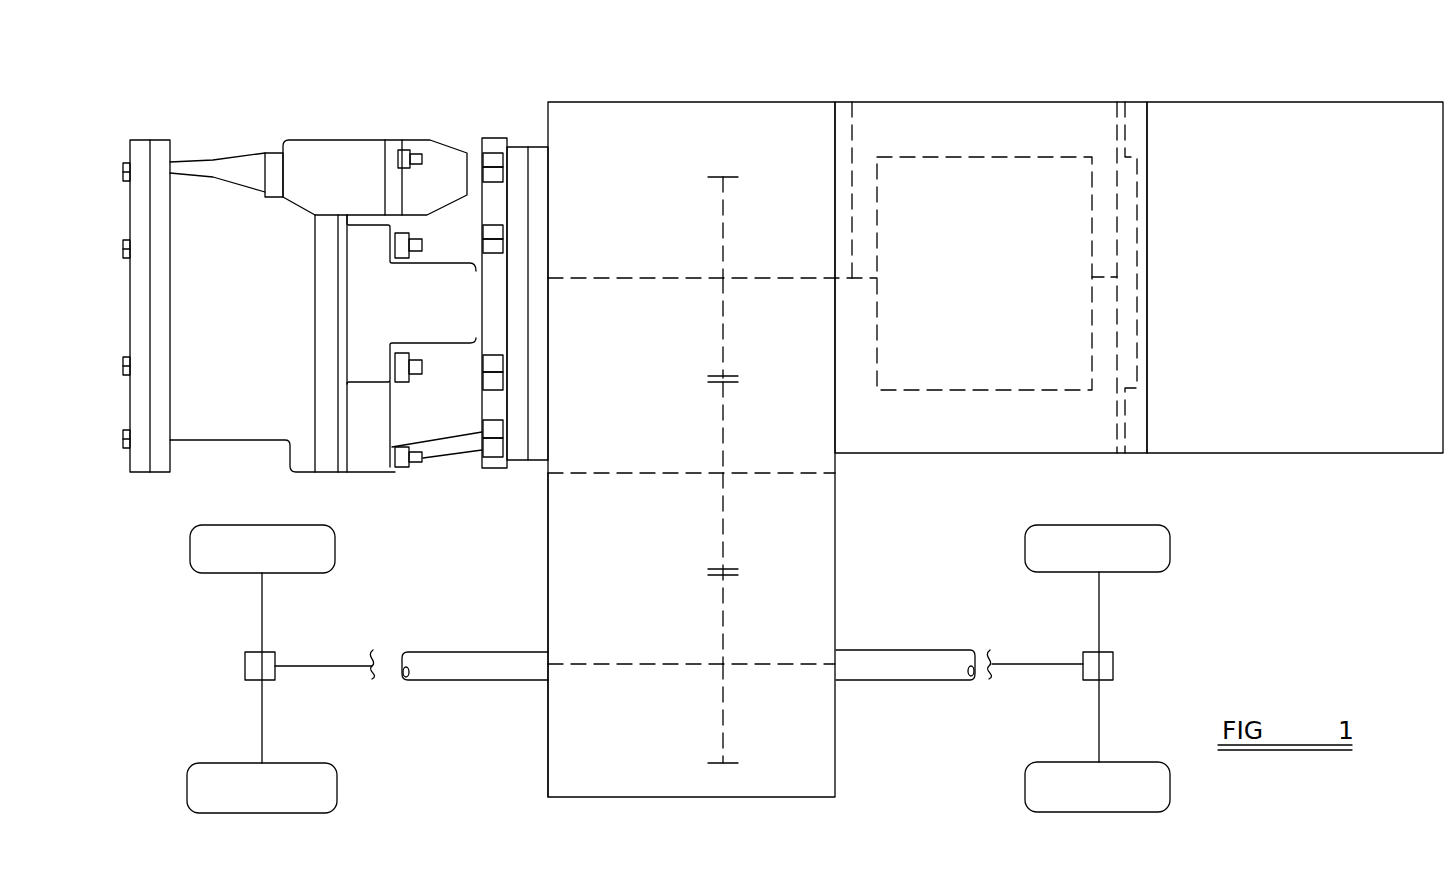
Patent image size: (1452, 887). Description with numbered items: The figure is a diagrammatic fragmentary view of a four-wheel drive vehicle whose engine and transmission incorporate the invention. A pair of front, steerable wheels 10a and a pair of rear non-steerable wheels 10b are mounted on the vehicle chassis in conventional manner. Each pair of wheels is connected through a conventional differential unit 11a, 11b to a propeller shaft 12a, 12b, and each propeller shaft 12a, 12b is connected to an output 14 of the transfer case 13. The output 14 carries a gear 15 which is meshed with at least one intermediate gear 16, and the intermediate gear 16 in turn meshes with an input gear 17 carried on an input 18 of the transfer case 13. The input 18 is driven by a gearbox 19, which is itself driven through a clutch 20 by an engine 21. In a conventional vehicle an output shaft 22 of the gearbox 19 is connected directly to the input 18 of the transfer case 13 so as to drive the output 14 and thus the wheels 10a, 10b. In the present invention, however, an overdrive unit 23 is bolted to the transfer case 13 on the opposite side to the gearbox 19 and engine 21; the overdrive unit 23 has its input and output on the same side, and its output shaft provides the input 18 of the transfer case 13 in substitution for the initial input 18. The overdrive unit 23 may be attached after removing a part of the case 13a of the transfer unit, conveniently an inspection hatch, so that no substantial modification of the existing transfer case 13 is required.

The front steerable wheels 10a is at (1170, 548).
The rear non-steerable wheels 10b is at (335, 548).
The differential unit 11a is at (1113, 655).
The differential unit 11b is at (225, 573).
The propeller shaft 12a is at (900, 650).
The propeller shaft 12b is at (498, 652).
The transfer case 13 is at (682, 102).
The case 13a is at (548, 518).
The output 14 is at (755, 665).
The gear 15 is at (723, 608).
The intermediate gear 16 is at (722, 416).
The input gear 17 is at (720, 308).
The input 18 is at (792, 270).
The gearbox 19 is at (978, 102).
The clutch 20 is at (1130, 102).
The engine 21 is at (1258, 102).
The output shaft 22 is at (855, 102).
The overdrive unit 23 is at (345, 128).